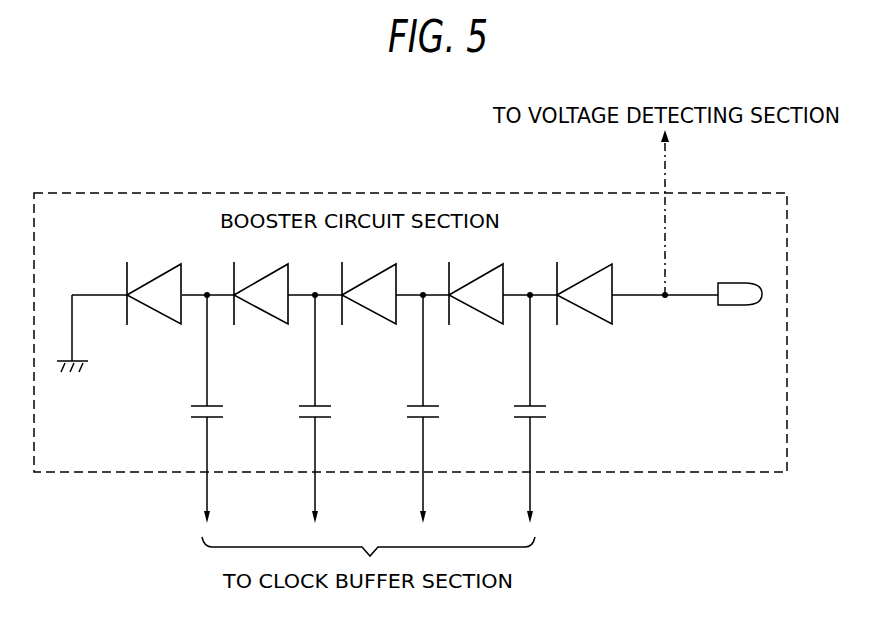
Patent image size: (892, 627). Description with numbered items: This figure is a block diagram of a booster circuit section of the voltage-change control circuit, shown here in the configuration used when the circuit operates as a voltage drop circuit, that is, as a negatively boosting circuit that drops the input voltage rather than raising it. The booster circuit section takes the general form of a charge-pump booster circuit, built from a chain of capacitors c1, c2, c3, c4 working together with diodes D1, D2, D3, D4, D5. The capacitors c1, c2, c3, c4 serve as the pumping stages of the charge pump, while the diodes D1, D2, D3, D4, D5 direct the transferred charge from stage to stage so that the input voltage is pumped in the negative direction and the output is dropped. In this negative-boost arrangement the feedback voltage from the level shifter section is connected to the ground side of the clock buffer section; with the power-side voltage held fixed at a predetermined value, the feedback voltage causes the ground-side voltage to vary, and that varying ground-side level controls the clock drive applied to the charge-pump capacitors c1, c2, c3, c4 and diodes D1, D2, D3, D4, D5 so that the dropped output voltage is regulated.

The diode D1 is at (584, 293).
The diode D2 is at (476, 293).
The diode D3 is at (369, 293).
The diode D4 is at (261, 293).
The diode D5 is at (154, 293).
The capacitor c1 is at (518, 409).
The capacitor c2 is at (410, 409).
The capacitor c3 is at (302, 409).
The capacitor c4 is at (194, 409).